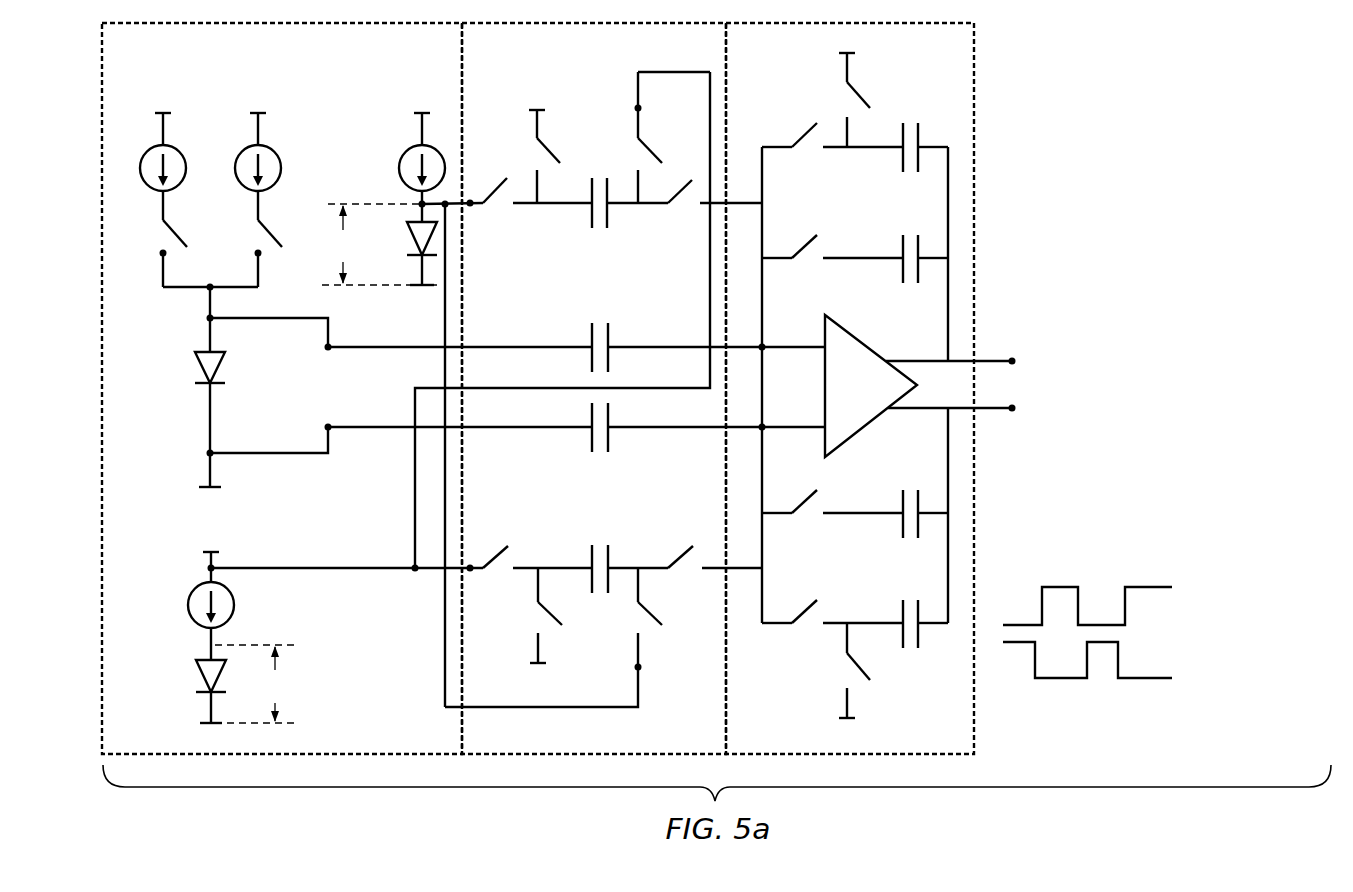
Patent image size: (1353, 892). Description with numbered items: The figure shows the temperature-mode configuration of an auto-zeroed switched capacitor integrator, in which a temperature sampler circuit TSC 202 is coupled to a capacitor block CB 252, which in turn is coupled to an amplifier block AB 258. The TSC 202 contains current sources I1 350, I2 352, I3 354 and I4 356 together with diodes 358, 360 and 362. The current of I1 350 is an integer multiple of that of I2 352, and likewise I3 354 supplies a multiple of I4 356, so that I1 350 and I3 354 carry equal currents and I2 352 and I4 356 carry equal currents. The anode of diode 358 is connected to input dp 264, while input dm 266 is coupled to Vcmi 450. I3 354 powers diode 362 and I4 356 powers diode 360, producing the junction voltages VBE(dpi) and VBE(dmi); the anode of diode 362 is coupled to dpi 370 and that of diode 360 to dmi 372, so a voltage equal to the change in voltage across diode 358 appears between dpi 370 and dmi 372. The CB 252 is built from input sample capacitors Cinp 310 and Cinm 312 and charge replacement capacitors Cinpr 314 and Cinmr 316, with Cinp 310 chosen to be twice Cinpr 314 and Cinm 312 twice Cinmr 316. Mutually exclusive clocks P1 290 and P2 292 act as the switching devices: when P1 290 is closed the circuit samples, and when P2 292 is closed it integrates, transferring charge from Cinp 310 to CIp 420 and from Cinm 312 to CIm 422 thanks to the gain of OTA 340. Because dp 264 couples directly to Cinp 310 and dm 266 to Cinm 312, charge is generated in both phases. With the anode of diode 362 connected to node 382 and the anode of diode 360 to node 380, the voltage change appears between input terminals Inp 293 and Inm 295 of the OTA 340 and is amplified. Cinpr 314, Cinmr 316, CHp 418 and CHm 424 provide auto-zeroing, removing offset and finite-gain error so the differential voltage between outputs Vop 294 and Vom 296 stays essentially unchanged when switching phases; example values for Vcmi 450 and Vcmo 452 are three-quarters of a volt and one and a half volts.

The TSC 202 is at (118, 750).
The CB 252 is at (480, 748).
The AB 258 is at (743, 748).
The current source I1 350 is at (173, 146).
The current source I2 352 is at (268, 146).
The current source I3 354 is at (415, 146).
The current source I4 356 is at (206, 582).
The diode 358 is at (204, 351).
The diode 360 is at (206, 658).
The diode 362 is at (411, 212).
The input dp 264 is at (401, 345).
The input dm 266 is at (401, 426).
The dpi 370 is at (471, 208).
The dmi 372 is at (476, 562).
The node 380 is at (638, 108).
The node 382 is at (641, 672).
The charge replacement capacitor Cinpr 314 is at (590, 220).
The charge replacement capacitor Cinmr 316 is at (590, 553).
The input sample capacitor Cinp 310 is at (612, 363).
The input sample capacitor Cinm 312 is at (612, 441).
The input terminal Inp 293 is at (716, 349).
The input terminal Inm 295 is at (716, 428).
The OTA 340 is at (853, 335).
The Vop 294 is at (973, 359).
The Vom 296 is at (974, 406).
The CHp 418 is at (900, 162).
The CIp 420 is at (900, 274).
The CIm 422 is at (900, 530).
The CHm 424 is at (900, 610).
The clock P1 290 is at (1106, 606).
The clock P2 292 is at (1106, 660).
The Vcmi 450 is at (1146, 708).
The Vcmo 452 is at (1153, 728).